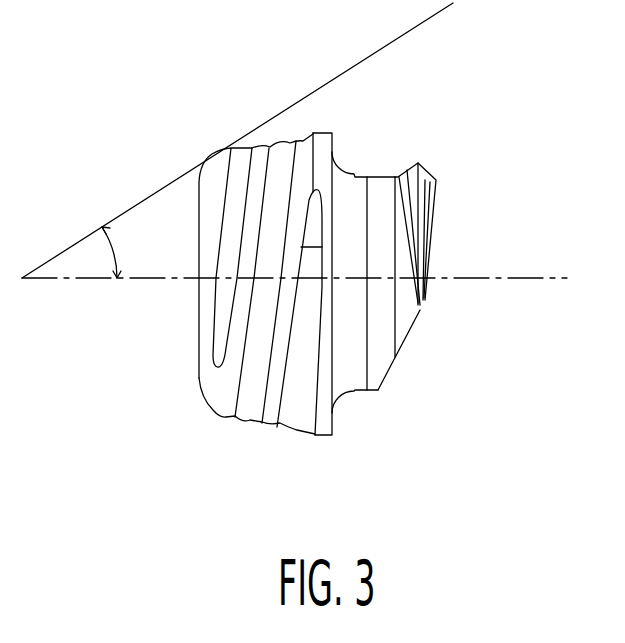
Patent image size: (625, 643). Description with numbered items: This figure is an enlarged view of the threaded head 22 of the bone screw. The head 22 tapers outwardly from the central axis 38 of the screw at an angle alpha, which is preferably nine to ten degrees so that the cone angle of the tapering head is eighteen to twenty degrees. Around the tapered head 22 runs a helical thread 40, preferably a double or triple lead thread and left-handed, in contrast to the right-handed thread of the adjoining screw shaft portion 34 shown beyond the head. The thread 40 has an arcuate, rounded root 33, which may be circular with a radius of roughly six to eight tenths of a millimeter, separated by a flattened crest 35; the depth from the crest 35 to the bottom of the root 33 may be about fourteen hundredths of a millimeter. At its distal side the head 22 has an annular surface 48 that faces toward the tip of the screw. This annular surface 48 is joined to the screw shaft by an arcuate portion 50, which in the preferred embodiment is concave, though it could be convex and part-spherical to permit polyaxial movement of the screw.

The screw head 22 is at (203, 174).
The root 33 is at (236, 414).
The threaded tip 34 is at (432, 178).
The flat crest 35 is at (257, 420).
The longitudinal axis 38 is at (500, 278).
The helical thread 40 is at (205, 402).
The annular surface 48 is at (335, 423).
The arcuate portion 50 is at (347, 166).